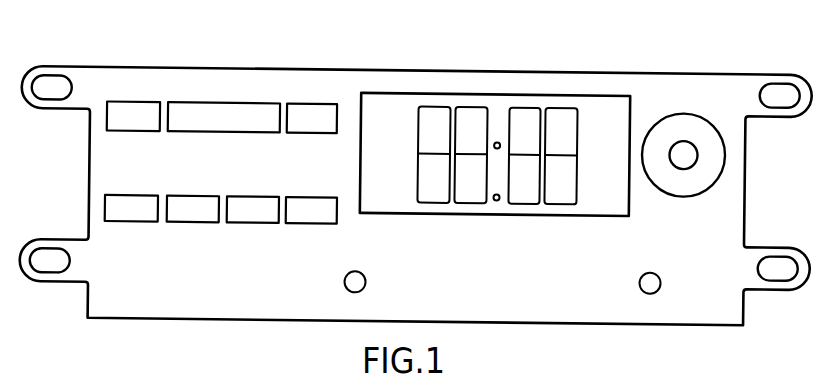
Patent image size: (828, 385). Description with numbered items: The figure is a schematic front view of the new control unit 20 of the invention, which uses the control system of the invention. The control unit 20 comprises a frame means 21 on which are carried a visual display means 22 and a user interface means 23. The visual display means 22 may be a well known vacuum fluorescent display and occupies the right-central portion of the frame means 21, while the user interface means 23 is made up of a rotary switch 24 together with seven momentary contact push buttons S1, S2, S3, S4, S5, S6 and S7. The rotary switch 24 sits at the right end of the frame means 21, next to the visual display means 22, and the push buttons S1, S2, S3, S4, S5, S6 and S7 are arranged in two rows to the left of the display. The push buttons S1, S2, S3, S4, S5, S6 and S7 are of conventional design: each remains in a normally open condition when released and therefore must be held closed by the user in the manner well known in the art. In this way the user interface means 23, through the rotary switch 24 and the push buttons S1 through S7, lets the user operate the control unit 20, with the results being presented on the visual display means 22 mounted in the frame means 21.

The control unit 20 is at (416, 167).
The frame means 21 is at (662, 80).
The visual display means 22 is at (504, 102).
The user interface means 23 is at (259, 84).
The rotary switch 24 is at (716, 147).
The momentary contact push button S1 is at (185, 201).
The momentary contact push button S2 is at (244, 200).
The momentary contact push button S3 is at (112, 208).
The momentary contact push button S4 is at (111, 116).
The momentary contact push button S5 is at (329, 208).
The momentary contact push button S6 is at (326, 106).
The momentary contact push button S7 is at (188, 106).